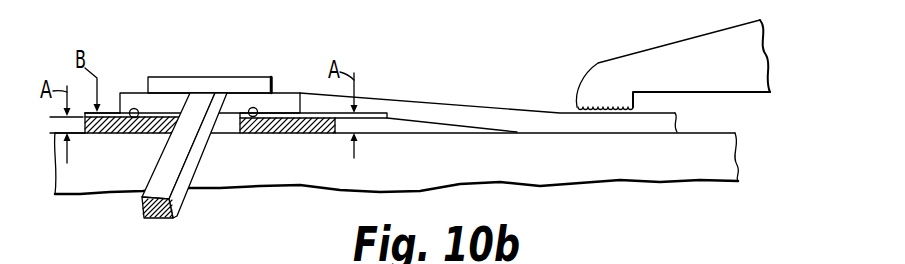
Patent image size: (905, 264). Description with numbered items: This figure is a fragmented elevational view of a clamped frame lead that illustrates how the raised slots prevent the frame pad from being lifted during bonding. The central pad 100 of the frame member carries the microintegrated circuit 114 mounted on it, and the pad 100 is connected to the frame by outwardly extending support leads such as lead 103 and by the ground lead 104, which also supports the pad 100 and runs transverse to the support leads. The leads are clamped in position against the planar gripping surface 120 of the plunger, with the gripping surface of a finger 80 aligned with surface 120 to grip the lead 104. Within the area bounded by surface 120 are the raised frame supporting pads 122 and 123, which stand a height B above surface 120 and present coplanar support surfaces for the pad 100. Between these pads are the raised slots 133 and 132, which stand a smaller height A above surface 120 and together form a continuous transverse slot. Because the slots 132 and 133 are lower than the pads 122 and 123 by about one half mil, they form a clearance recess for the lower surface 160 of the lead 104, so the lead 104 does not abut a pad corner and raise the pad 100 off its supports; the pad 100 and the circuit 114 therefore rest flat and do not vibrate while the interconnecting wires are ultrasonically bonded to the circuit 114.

The finger 80 is at (595, 82).
The central pad 100 is at (133, 93).
The support lead 103 is at (190, 184).
The ground lead 104 is at (487, 107).
The microintegrated circuit 114 is at (193, 77).
The gripping surface 120 is at (720, 129).
The frame supporting pad 122 is at (95, 112).
The frame supporting pad 123 is at (250, 118).
The raised slot 132 is at (290, 113).
The raised slot 133 is at (135, 118).
The lower surface 160 is at (396, 120).